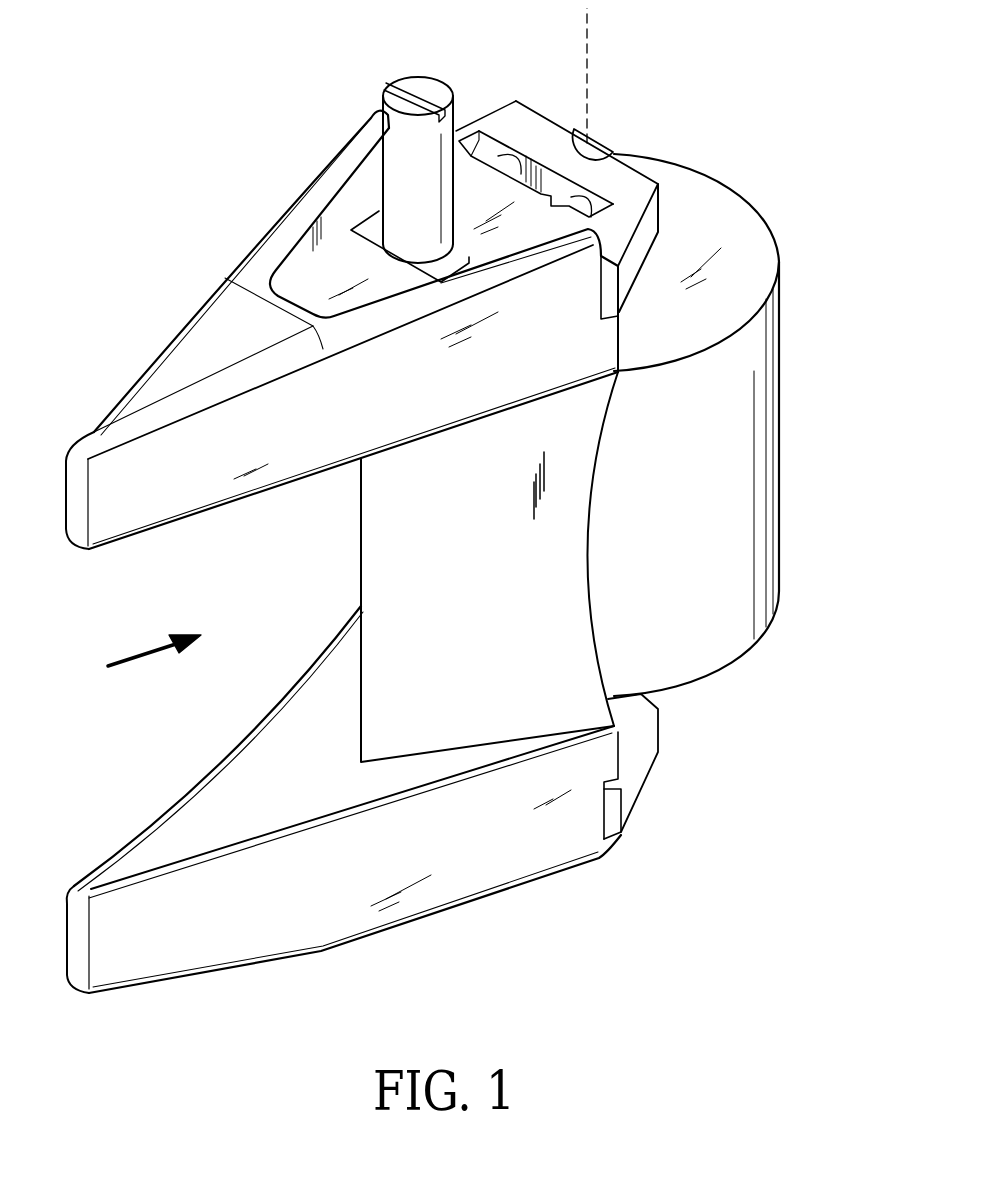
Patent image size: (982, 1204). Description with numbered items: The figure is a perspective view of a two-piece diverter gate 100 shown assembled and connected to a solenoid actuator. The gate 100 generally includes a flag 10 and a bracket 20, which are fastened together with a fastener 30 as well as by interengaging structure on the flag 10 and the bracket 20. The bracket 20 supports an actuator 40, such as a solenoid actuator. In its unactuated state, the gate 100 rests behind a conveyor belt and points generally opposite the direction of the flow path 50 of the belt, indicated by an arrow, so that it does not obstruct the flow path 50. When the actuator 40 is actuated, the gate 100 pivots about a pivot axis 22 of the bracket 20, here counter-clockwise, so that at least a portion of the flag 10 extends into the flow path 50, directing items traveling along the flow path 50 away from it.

The two-piece diverter gate 100 is at (203, 160).
The flag 10 is at (183, 458).
The bracket 20 is at (623, 188).
The pivot axis 22 is at (588, 22).
The fastener 30 is at (440, 88).
The actuator 40 is at (782, 442).
The flow path 50 is at (137, 653).